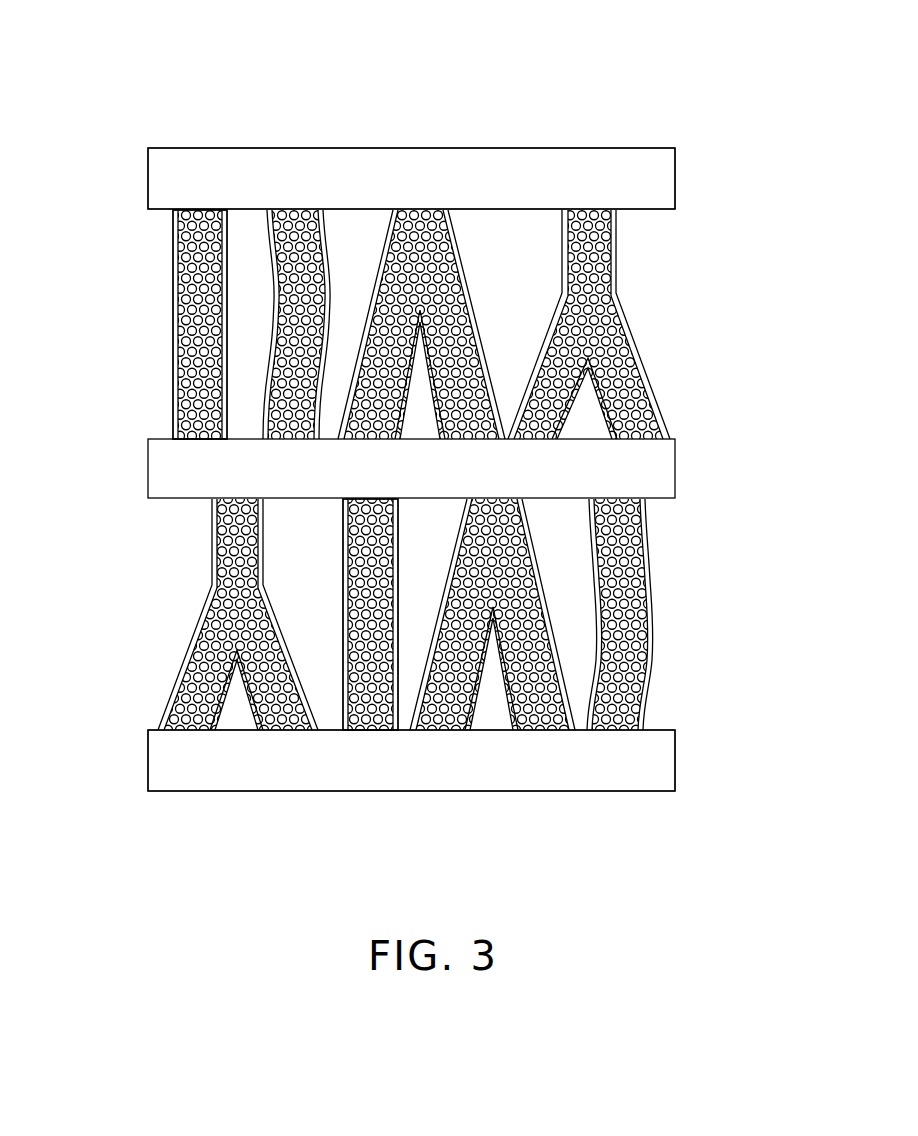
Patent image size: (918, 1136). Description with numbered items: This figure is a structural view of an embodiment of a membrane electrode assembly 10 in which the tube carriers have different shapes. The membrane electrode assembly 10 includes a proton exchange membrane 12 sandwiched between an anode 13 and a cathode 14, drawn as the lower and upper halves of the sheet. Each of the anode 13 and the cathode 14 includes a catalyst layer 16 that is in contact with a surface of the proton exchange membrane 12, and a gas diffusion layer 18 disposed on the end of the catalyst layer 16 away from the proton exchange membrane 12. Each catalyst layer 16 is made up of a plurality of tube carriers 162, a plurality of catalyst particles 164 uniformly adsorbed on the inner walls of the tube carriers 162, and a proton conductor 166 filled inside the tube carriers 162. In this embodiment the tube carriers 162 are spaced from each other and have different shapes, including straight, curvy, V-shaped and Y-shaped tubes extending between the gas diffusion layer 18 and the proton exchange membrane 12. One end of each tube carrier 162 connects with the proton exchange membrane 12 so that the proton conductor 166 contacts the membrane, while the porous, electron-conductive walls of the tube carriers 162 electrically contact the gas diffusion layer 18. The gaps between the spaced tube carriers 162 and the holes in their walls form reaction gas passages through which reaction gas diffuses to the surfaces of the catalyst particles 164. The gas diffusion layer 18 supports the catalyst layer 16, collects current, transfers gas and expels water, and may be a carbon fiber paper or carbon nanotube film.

The membrane electrode assembly 10 is at (522, 61).
The proton exchange membrane 12 is at (650, 471).
The anode 13 is at (745, 575).
The cathode 14 is at (83, 172).
The catalyst layer 16 is at (413, 470).
The gas diffusion layer 18 is at (165, 187).
The tube carrier 162 is at (628, 309).
The catalyst particles 164 is at (610, 262).
The proton conductor 166 is at (598, 281).